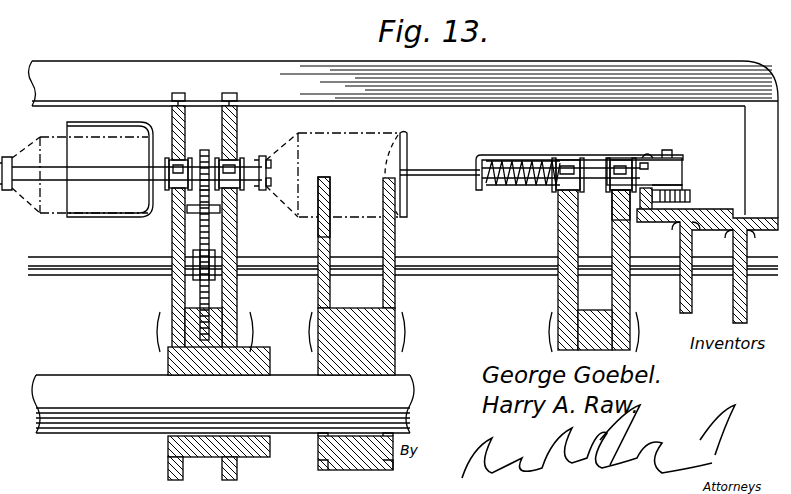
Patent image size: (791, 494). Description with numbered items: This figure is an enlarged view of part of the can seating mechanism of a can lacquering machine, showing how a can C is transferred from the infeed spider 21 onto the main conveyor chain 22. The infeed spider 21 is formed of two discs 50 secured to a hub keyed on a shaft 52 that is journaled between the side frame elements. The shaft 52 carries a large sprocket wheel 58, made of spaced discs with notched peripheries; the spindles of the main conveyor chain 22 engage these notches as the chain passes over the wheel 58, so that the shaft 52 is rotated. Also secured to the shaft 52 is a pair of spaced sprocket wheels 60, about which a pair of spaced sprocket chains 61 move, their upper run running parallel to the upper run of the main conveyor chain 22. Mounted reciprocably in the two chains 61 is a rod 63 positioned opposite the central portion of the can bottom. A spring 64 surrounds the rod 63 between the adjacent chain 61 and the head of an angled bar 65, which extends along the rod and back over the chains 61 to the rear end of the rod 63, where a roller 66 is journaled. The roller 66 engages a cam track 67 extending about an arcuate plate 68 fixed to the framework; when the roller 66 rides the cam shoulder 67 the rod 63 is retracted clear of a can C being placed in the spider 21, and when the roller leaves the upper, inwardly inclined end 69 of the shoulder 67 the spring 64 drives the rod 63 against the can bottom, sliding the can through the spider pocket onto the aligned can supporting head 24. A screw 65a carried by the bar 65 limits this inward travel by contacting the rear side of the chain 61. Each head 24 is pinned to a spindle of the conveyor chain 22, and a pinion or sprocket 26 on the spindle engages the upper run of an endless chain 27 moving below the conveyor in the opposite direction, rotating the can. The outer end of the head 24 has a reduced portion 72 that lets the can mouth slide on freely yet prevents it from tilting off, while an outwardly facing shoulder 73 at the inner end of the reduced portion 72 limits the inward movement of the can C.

The infeed spider 21 is at (396, 290).
The main conveyor chain 22 is at (213, 165).
The can supporting head 24 is at (240, 172).
The pinion or sprocket 26 is at (203, 156).
The endless chain 27 is at (216, 226).
The discs 50 is at (385, 237).
The shaft 52 is at (58, 388).
The large sprocket wheel 58 is at (172, 300).
The sprocket wheels 60 is at (556, 298).
The sprocket chains 61 is at (585, 166).
The rod 63 is at (430, 176).
The spring 64 is at (530, 183).
The angled bar 65 is at (520, 156).
The screw 65a is at (646, 151).
The roller 66 is at (688, 190).
The cam track 67 is at (648, 214).
The arcuate plate 68 is at (690, 211).
The inwardly inclined end 69 is at (614, 210).
The reduced portion 72 is at (266, 164).
The shoulder 73 is at (266, 180).
The can C is at (367, 150).